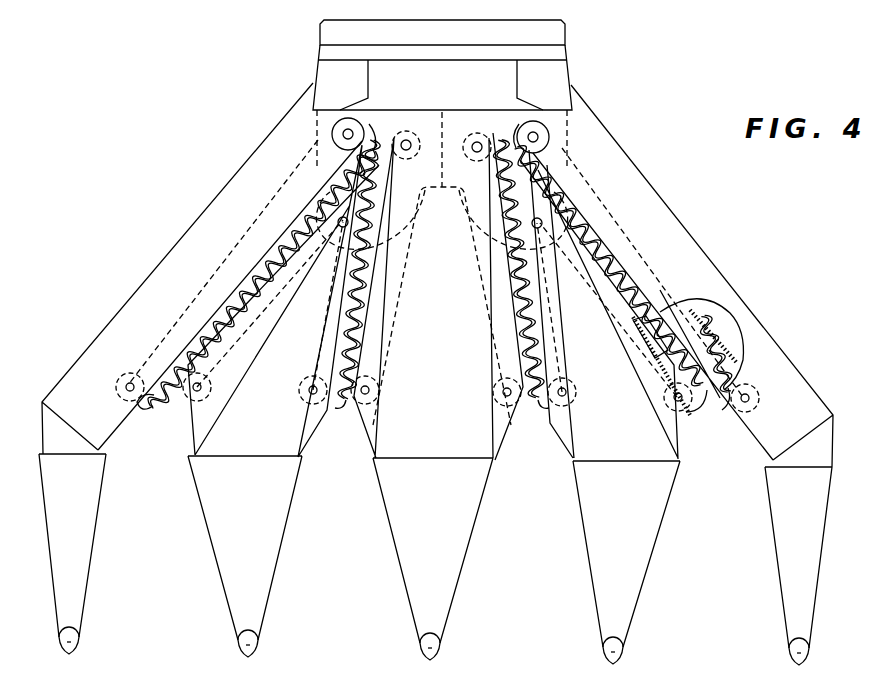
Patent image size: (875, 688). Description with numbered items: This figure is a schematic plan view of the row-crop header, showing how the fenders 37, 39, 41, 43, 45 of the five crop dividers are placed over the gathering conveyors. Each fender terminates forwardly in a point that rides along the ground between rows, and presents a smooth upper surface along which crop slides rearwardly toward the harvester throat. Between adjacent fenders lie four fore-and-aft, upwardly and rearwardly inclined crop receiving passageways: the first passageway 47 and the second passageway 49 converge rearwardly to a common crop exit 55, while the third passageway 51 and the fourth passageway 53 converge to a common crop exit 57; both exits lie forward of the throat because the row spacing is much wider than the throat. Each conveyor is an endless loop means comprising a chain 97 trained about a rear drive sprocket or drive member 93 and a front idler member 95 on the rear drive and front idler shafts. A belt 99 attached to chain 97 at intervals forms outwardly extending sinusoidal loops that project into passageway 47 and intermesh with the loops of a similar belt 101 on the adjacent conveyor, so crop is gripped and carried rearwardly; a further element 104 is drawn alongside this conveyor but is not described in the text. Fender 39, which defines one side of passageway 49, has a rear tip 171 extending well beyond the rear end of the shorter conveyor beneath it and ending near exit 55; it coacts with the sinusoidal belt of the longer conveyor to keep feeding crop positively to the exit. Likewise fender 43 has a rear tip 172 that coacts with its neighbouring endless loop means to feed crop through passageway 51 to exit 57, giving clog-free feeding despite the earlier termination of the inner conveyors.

The fender 37 is at (713, 288).
The fender 39 is at (628, 438).
The fender 41 is at (451, 433).
The fender 43 is at (264, 428).
The fender 45 is at (191, 283).
The crop receiving passageway 47 is at (722, 456).
The second passageway 49 is at (533, 452).
The third passageway 51 is at (335, 450).
The fourth passageway 53 is at (149, 448).
The crop exit 55 is at (505, 128).
The crop exit 57 is at (378, 128).
The drive member 93 is at (551, 138).
The idler member 95 is at (760, 398).
The chain 97 is at (740, 355).
The belt 99 is at (730, 313).
The belt 101 is at (686, 411).
The sensor block 104 is at (657, 337).
The rear tip 171 is at (542, 175).
The rear tip 172 is at (320, 163).